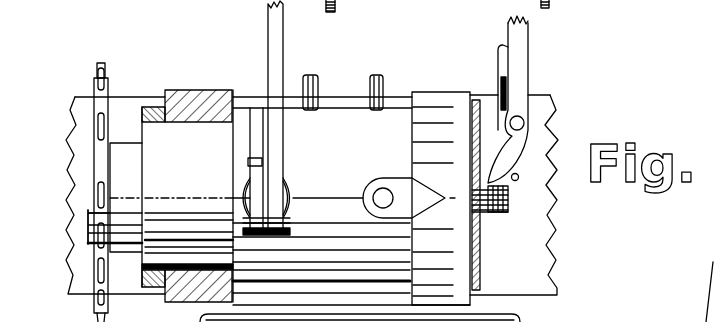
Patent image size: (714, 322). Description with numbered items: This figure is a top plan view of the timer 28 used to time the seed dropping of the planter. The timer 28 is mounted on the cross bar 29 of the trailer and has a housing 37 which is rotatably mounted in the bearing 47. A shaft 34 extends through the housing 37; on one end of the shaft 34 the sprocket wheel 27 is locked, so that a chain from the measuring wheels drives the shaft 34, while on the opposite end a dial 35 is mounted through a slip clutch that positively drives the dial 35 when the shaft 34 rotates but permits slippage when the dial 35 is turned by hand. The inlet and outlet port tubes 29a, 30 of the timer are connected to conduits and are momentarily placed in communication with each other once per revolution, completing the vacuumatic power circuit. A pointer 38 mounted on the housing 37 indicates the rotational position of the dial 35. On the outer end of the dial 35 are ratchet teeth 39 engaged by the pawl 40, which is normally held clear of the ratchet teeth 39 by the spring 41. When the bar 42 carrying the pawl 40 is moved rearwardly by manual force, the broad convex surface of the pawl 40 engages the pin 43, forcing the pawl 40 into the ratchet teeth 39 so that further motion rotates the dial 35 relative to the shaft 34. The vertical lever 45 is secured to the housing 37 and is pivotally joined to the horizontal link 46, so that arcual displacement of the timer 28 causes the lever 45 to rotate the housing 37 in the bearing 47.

The sprocket wheel 27 is at (100, 64).
The timer 28 is at (343, 79).
The cross bar 29 is at (558, 286).
The inlet port 29a is at (383, 78).
The outlet port 30 is at (305, 82).
The shaft 34 is at (88, 208).
The dial 35 is at (441, 96).
The housing 37 is at (250, 106).
The pointer 38 is at (403, 178).
The ratchet teeth 39 is at (480, 240).
The pawl 40 is at (526, 149).
The spring 41 is at (500, 87).
The bar 42 is at (528, 62).
The pin 43 is at (509, 197).
The vertical lever 45 is at (255, 170).
The horizontal link 46 is at (268, 38).
The bearing 47 is at (189, 90).